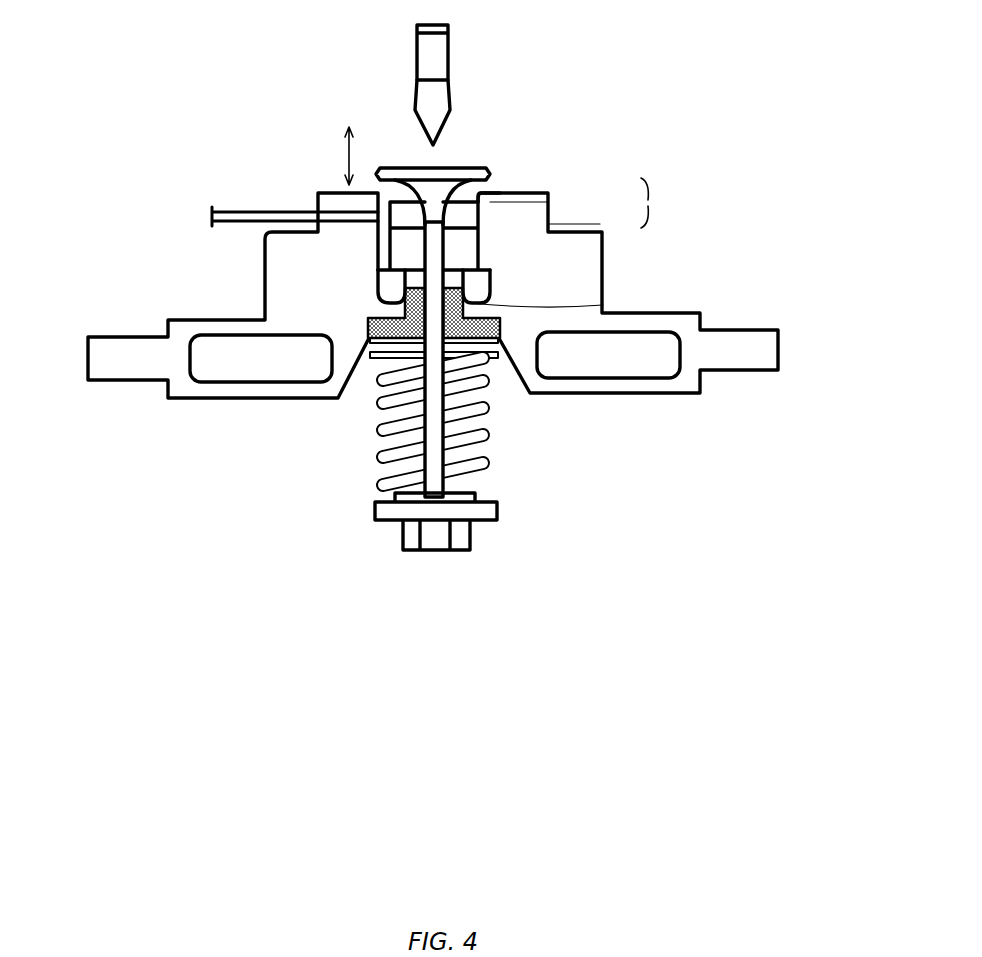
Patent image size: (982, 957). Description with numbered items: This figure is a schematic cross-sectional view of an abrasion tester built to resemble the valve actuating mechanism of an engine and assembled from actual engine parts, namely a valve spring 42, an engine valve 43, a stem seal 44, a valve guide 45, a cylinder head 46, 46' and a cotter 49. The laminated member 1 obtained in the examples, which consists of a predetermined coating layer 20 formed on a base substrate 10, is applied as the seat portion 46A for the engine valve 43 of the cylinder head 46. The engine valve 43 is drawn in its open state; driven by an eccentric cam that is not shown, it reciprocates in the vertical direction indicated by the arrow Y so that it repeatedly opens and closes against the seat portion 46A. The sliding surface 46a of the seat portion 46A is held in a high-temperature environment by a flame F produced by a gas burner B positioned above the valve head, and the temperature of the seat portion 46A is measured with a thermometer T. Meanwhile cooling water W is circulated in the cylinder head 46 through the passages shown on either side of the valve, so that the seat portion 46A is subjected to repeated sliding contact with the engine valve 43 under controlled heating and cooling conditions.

The gas burner B is at (418, 31).
The flame F is at (430, 95).
The thermometer T is at (237, 211).
The arrow Y is at (346, 152).
The engine valve 43 is at (447, 170).
The seat portion 46A is at (467, 210).
The sliding surface 46a is at (480, 198).
The coating layer 20 is at (548, 201).
The base substrate 10 is at (540, 223).
The laminated member 1 is at (648, 203).
The cylinder head 46 is at (433, 295).
The valve guide 45 is at (603, 305).
The cylinder head 46' is at (326, 283).
The stem seal 44 is at (368, 350).
The cooling water W is at (248, 373).
The valve spring 42 is at (490, 435).
The cotter 49 is at (497, 510).